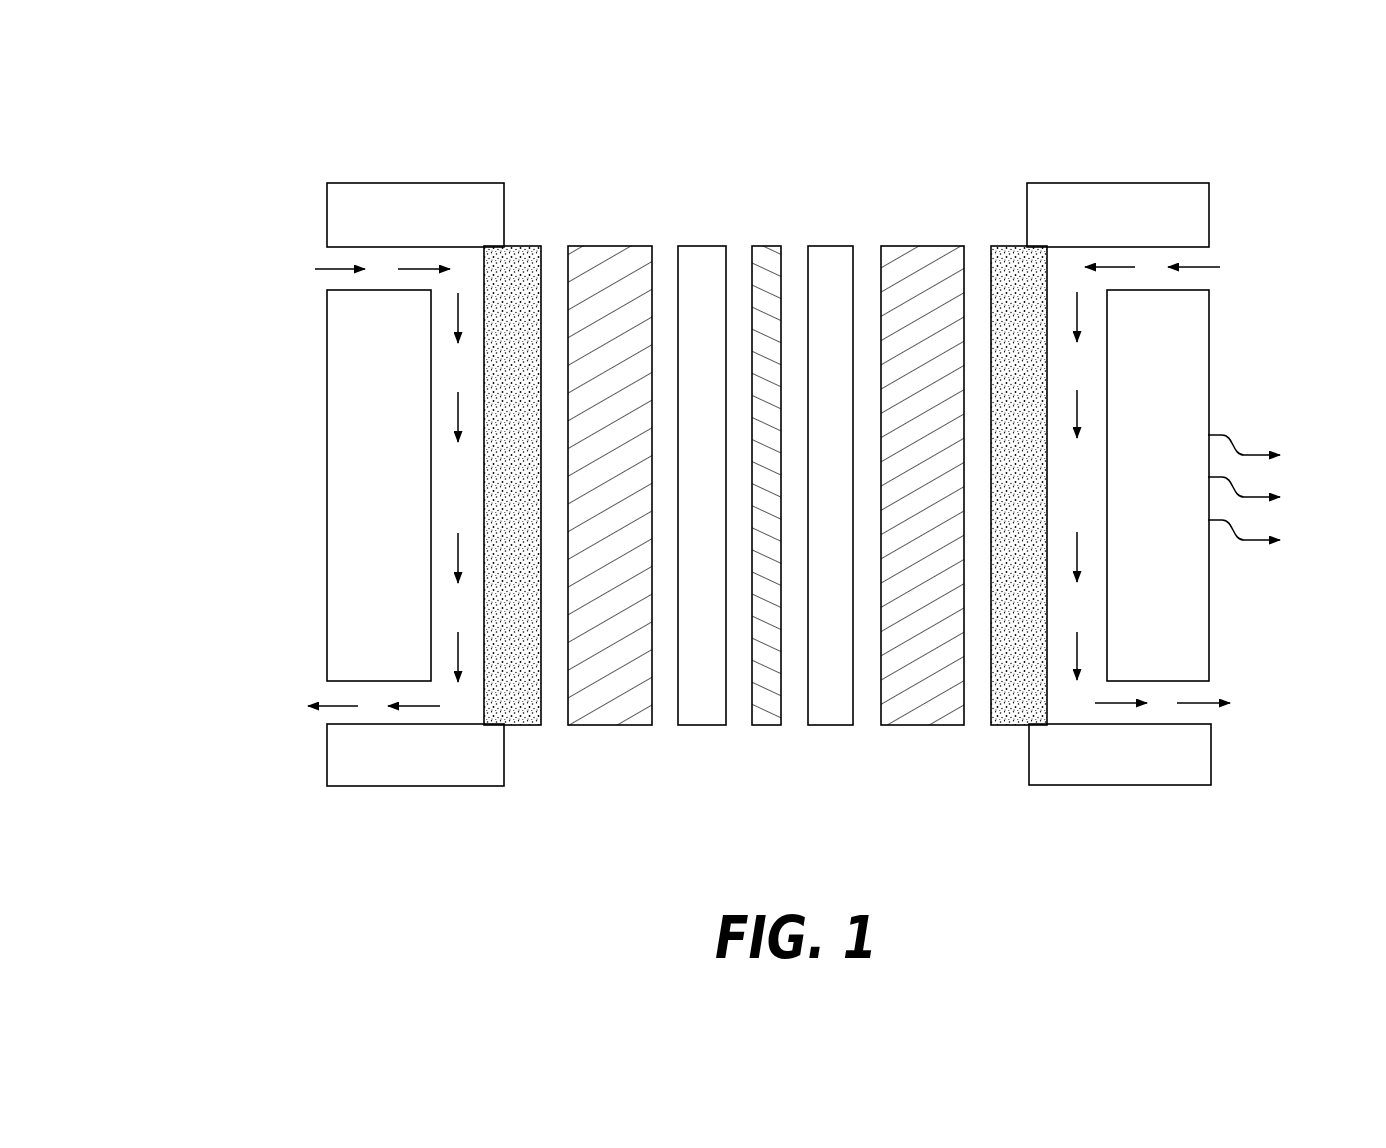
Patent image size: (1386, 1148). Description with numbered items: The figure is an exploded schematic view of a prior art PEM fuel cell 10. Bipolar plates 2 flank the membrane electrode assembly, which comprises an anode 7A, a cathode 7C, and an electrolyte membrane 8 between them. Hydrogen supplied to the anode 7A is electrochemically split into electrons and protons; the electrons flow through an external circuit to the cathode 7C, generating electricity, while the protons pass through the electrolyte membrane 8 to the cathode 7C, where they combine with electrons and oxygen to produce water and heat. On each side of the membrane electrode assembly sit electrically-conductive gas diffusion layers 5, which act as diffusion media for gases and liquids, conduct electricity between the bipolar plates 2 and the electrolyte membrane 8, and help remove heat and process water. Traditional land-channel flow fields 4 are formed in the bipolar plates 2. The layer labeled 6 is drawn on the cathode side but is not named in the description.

The PEM fuel cell 10 is at (751, 456).
The bipolar plates 2 is at (392, 786).
The flow fields 4 is at (518, 725).
The gas diffusion layers 5 is at (623, 725).
The anode 7A is at (707, 725).
The electrolyte membrane 8 is at (772, 725).
The cathode 7C is at (840, 725).
The cathode porous transport layer 6 is at (1013, 725).